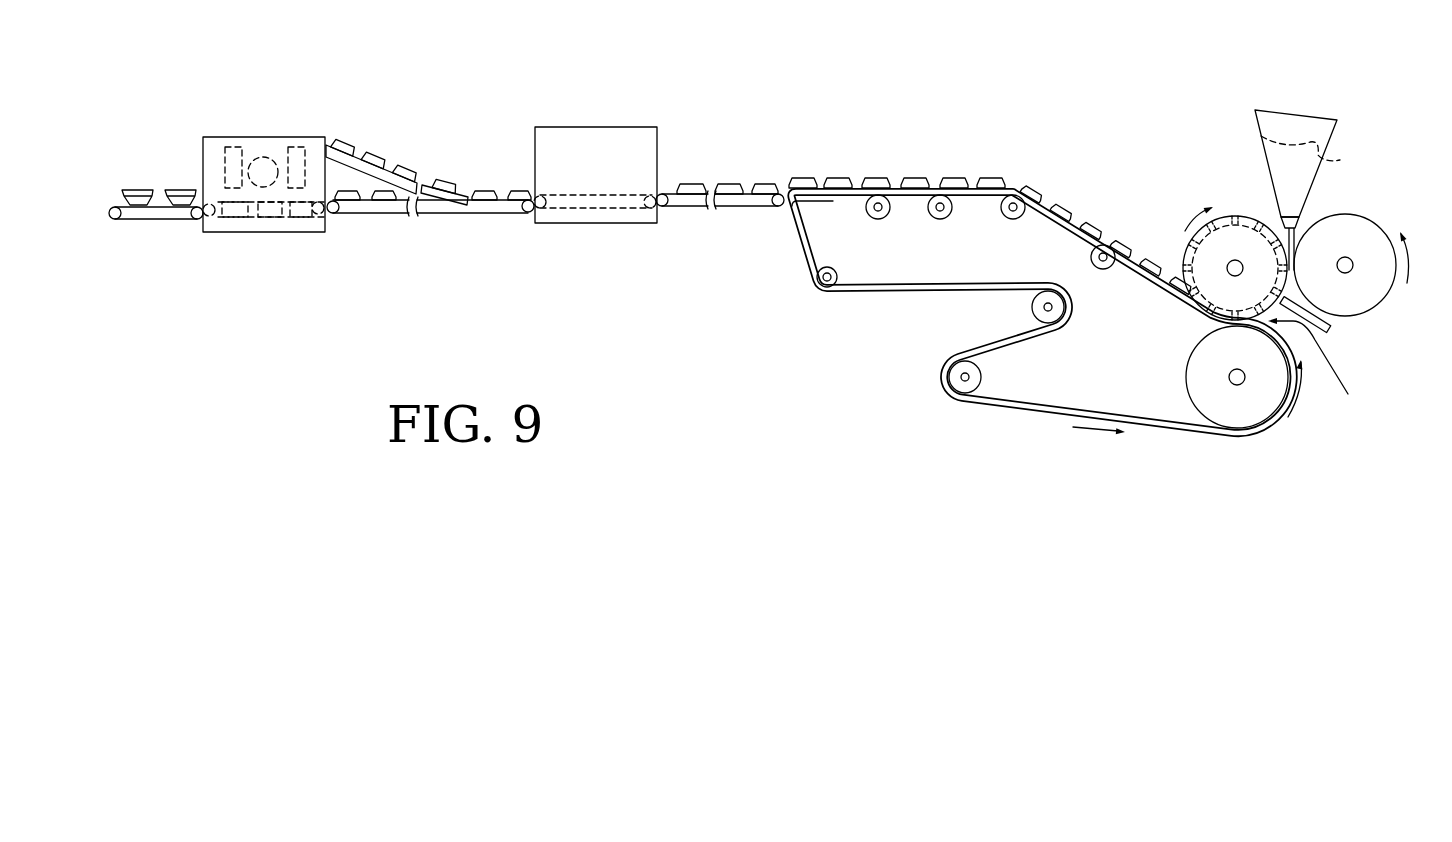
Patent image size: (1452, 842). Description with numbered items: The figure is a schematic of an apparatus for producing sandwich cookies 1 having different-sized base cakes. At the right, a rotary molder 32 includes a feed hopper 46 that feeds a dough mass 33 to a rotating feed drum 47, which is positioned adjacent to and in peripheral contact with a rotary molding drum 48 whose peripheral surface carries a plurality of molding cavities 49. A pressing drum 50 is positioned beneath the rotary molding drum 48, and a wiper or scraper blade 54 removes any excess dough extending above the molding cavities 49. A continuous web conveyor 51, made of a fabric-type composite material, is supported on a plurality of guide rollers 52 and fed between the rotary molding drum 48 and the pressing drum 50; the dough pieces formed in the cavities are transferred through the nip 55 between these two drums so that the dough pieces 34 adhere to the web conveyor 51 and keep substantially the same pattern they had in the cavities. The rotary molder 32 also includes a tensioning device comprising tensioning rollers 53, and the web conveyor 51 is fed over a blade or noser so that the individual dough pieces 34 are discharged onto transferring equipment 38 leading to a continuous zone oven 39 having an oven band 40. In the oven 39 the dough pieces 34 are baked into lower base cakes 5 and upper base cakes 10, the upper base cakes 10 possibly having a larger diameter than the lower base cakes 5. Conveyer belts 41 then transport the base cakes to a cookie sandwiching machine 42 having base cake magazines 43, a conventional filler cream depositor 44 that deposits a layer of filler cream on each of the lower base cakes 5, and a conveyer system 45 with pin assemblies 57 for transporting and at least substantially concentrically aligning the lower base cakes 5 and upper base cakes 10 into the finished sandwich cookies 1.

The sandwich cookies 1 is at (127, 190).
The lower base cakes 5 is at (180, 221).
The upper base cakes 10 is at (178, 192).
The rotary molder 32 is at (1378, 206).
The dough 33 is at (1300, 235).
The dough pieces 34 is at (700, 186).
The transferring equipment 38 is at (672, 193).
The continuous zone oven 39 is at (617, 127).
The oven band 40 is at (563, 197).
The conveyer belts 41 is at (462, 188).
The cookie sandwiching machine 42 is at (250, 137).
The base cake magazines 43 is at (224, 160).
The filler cream depositor 44 is at (266, 158).
The conveyer system 45 is at (237, 221).
The feed hopper 46 is at (1267, 110).
The rotating feed drum 47 is at (1377, 310).
The rotary molding drum 48 is at (1188, 238).
The molding cavities 49 is at (1225, 210).
The pressing drum 50 is at (1240, 418).
The continuous web conveyor 51 is at (1267, 428).
The guide rollers 52 is at (877, 219).
The tensioning rollers 53 is at (805, 205).
The wiper or scraper blade 54 is at (1334, 331).
The nip 55 is at (1322, 370).
The pin assemblies 57 is at (312, 200).